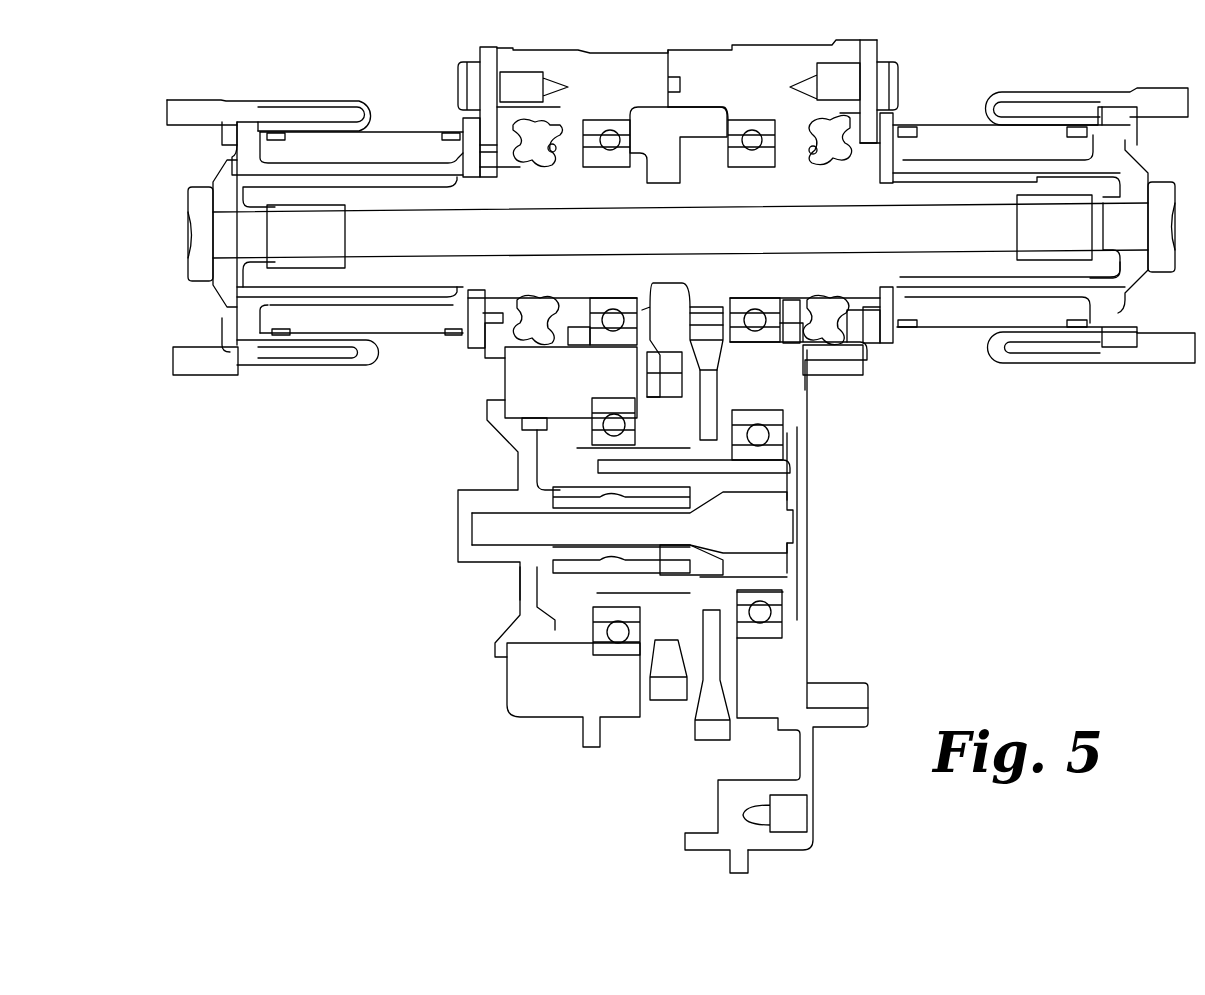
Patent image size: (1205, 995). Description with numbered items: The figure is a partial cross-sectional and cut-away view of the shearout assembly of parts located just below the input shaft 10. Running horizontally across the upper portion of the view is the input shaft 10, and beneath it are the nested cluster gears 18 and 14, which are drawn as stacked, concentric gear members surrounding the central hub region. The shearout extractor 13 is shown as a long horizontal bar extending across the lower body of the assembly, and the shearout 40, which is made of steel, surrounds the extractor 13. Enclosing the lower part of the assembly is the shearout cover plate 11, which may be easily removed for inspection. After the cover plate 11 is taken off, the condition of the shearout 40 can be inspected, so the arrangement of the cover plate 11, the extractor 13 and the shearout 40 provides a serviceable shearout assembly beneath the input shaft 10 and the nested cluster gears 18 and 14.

The input shaft 10 is at (681, 231).
The shearout cover plate 11 is at (502, 645).
The shearout extractor 13 is at (492, 532).
The nested cluster gear 14 is at (708, 342).
The nested cluster gear 18 is at (660, 365).
The shearout 40 is at (680, 562).